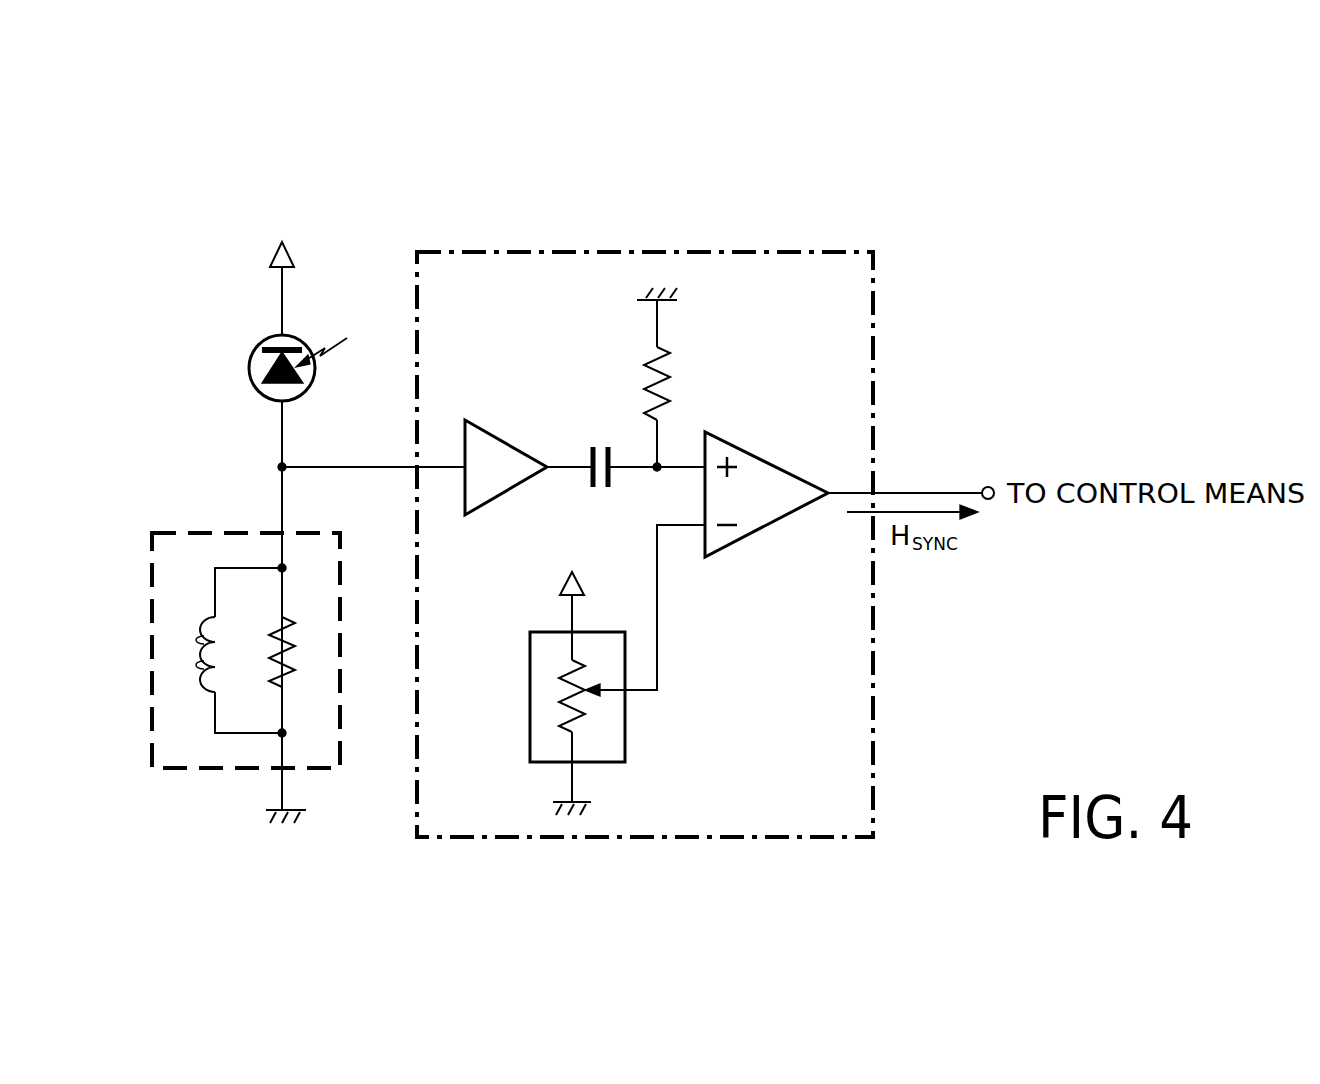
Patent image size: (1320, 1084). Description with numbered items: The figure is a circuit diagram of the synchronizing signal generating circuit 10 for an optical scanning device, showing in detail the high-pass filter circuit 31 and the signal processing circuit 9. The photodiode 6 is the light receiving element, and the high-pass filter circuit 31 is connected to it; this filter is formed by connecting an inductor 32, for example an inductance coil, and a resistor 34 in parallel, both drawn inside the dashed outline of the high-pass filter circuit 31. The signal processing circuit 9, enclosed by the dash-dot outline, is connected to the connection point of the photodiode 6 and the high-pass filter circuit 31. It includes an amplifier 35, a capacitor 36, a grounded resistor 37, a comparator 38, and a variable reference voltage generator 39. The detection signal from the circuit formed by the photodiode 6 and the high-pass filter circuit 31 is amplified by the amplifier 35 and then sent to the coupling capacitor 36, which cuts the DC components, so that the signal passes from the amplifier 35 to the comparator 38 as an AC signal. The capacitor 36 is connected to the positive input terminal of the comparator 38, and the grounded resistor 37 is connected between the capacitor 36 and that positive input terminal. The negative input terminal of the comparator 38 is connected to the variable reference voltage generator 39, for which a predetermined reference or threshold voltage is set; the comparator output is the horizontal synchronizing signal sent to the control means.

The photodiode 6 is at (250, 360).
The signal processing circuit 9 is at (752, 250).
The synchronizing signal generating circuit 10 is at (389, 242).
The high-pass filter circuit 31 is at (230, 505).
The inductor 32 is at (195, 615).
The resistor 34 is at (272, 648).
The amplifier 35 is at (502, 495).
The capacitor 36 is at (600, 446).
The grounded resistor 37 is at (664, 373).
The comparator 38 is at (770, 463).
The variable reference voltage generator 39 is at (626, 742).